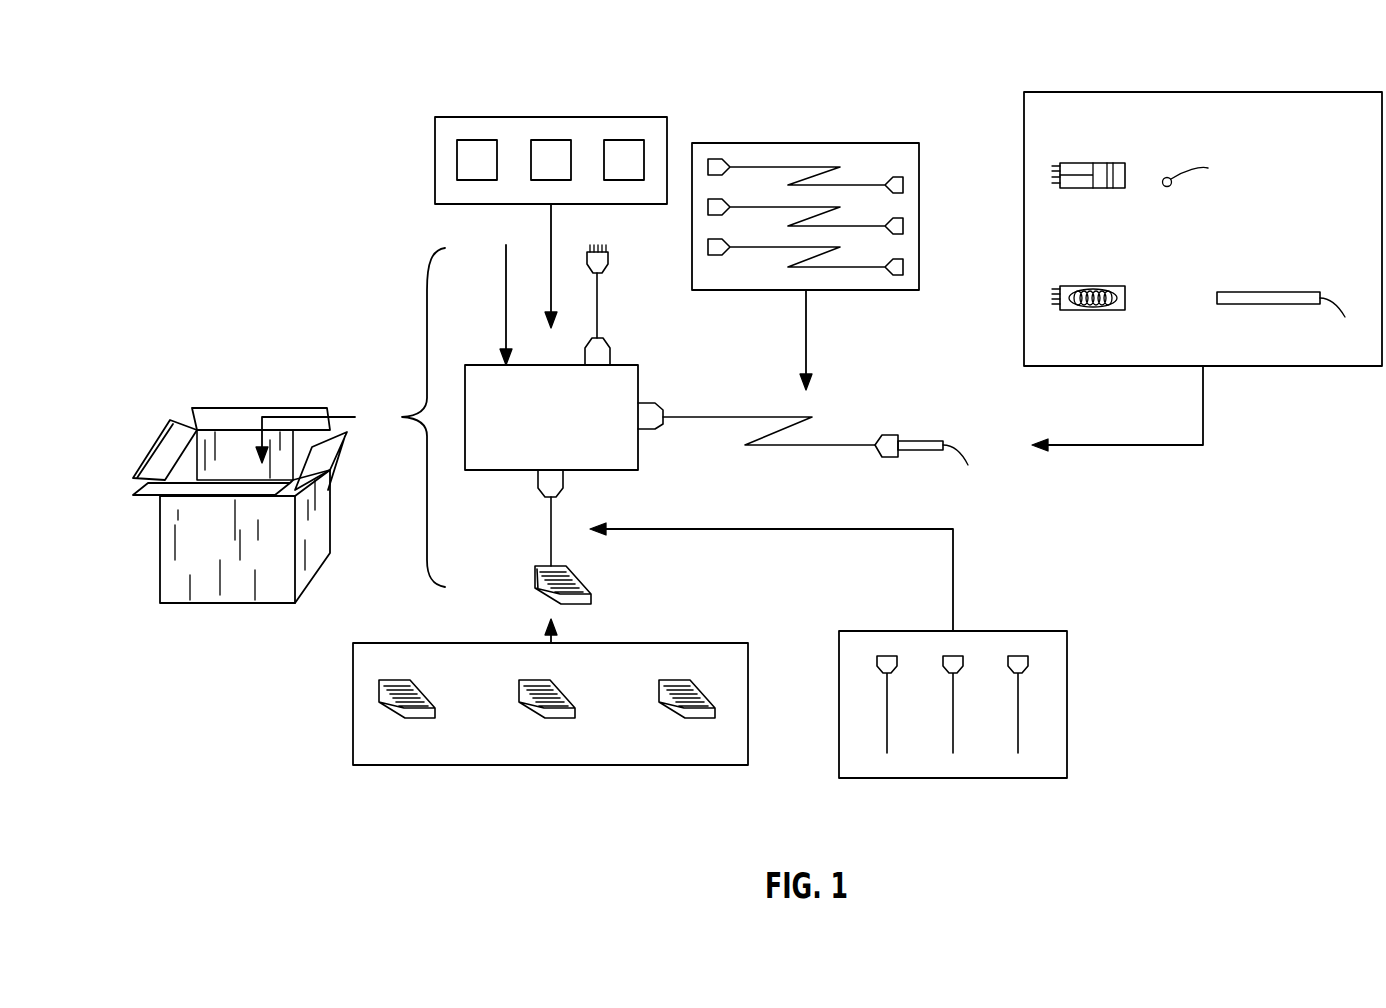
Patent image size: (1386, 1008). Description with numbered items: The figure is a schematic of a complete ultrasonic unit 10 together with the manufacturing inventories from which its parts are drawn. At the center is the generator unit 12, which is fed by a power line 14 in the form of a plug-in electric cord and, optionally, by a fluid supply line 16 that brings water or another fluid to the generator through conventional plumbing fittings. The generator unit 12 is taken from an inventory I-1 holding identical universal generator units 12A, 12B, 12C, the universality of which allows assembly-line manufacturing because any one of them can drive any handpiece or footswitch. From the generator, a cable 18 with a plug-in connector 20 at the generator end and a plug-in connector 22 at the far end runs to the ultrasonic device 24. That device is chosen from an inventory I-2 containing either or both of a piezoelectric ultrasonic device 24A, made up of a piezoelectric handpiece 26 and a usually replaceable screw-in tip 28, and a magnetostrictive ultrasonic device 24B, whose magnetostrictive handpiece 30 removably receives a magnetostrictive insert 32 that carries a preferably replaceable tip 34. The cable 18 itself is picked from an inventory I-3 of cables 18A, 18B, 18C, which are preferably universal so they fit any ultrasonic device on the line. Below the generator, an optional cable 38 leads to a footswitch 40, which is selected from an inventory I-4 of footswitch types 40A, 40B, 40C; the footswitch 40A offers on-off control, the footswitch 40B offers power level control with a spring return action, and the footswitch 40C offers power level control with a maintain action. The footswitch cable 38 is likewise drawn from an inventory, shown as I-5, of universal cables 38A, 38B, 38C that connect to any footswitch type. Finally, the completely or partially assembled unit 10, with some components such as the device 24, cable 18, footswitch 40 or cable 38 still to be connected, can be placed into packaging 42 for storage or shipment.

The ultrasonic unit 10 is at (350, 417).
The generator unit 12 is at (490, 363).
The generator unit 12A is at (457, 160).
The generator unit 12B is at (551, 140).
The generator unit 12C is at (623, 140).
The power line 14 is at (597, 307).
The fluid supply line 16 is at (503, 317).
The cable 18 is at (745, 417).
The cable 18A is at (799, 166).
The cable 18B is at (866, 225).
The cable 18C is at (865, 270).
The plug-in connector 20 is at (644, 403).
The plug-in connector 22 is at (888, 435).
The ultrasonic device 24 is at (907, 450).
The piezoelectric ultrasonic device 24A is at (1223, 157).
The magnetostrictive ultrasonic device 24B is at (1320, 287).
The piezoelectric handpiece 26 is at (1110, 188).
The screw-in tip 28 is at (1208, 168).
The magnetostrictive handpiece 30 is at (1098, 310).
The magnetostrictive insert 32 is at (1268, 305).
The tip 34 is at (1328, 297).
The cable 38 is at (552, 517).
The cable 38A is at (885, 720).
The cable 38B is at (955, 707).
The cable 38C is at (1018, 715).
The footswitch 40 is at (580, 578).
The footswitch 40A is at (407, 718).
The footswitch 40B is at (547, 718).
The footswitch 40C is at (687, 718).
The packaging 42 is at (158, 543).
The inventory I-1 is at (493, 117).
The inventory I-2 is at (1332, 92).
The inventory I-3 is at (750, 143).
The inventory I-4 is at (412, 643).
The interface 5 - footswitch cables I-5 is at (897, 631).